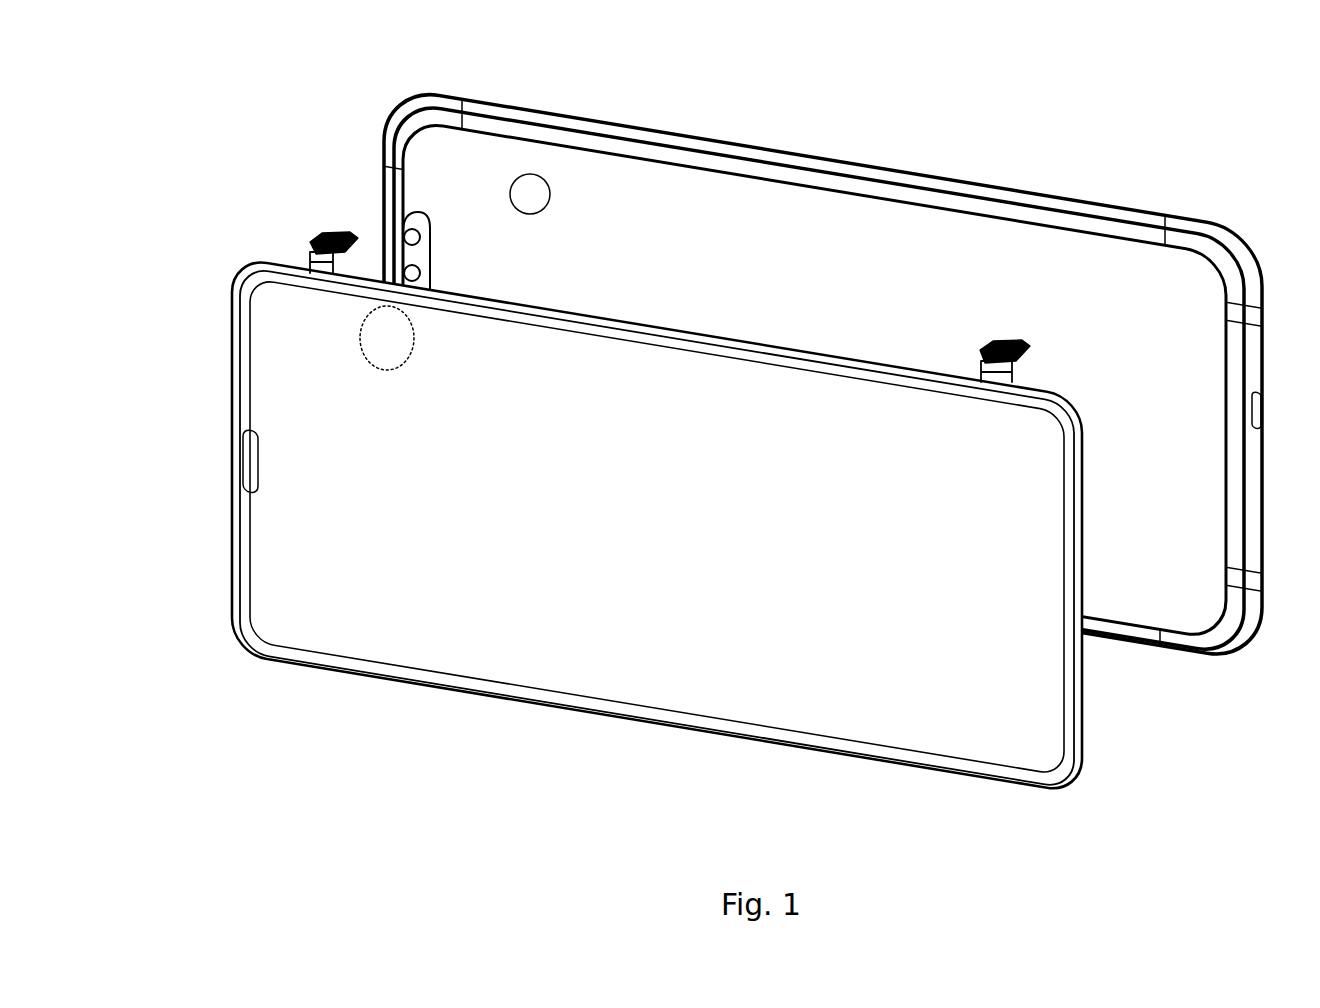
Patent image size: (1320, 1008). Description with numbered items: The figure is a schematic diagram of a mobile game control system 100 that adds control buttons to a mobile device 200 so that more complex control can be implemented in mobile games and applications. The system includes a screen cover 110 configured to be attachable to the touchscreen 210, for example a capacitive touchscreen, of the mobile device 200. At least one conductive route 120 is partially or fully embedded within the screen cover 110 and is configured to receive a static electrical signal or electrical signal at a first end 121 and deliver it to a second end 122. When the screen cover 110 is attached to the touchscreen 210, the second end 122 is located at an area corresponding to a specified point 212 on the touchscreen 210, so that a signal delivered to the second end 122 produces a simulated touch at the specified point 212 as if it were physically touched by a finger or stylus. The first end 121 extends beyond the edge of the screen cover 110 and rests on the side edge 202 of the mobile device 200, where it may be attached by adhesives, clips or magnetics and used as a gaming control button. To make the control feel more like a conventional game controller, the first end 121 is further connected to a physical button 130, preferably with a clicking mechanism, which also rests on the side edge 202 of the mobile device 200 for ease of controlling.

The mobile game control system 100 is at (1065, 792).
The screen cover 110 is at (310, 602).
The conductive route 120 is at (390, 312).
The first end 121 is at (308, 258).
The second end 122 is at (385, 347).
The physical button 130 is at (328, 237).
The mobile device 200 is at (1093, 177).
The side edge 202 is at (993, 193).
The touchscreen 210 is at (775, 257).
The specified point 212 is at (528, 193).